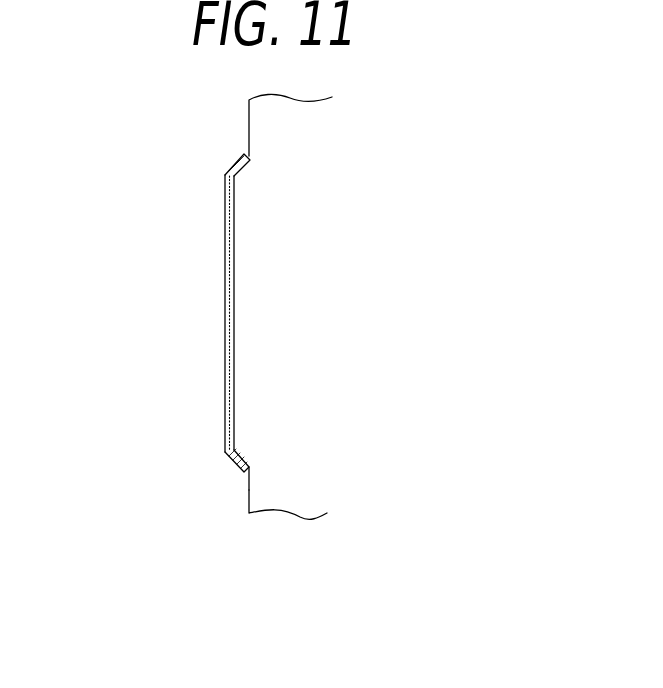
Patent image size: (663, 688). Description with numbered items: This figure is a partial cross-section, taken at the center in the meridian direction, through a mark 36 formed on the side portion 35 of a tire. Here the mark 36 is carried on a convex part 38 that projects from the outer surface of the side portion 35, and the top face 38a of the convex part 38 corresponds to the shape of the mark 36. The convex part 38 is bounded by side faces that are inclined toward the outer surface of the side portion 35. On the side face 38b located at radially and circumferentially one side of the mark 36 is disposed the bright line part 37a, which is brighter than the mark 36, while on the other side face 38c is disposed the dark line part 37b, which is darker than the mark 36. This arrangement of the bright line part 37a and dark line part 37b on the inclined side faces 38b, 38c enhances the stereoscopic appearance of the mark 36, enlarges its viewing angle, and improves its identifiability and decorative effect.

The side portion 35 is at (262, 493).
The mark 36 is at (225, 275).
The bright line part 37a is at (240, 168).
The dark line part 37b is at (237, 465).
The convex part 38 is at (252, 345).
The top face 38a is at (233, 310).
The side face 38b is at (243, 168).
The side face 38c is at (245, 456).